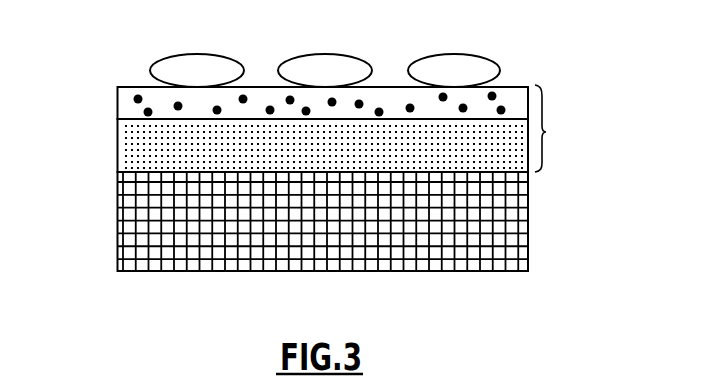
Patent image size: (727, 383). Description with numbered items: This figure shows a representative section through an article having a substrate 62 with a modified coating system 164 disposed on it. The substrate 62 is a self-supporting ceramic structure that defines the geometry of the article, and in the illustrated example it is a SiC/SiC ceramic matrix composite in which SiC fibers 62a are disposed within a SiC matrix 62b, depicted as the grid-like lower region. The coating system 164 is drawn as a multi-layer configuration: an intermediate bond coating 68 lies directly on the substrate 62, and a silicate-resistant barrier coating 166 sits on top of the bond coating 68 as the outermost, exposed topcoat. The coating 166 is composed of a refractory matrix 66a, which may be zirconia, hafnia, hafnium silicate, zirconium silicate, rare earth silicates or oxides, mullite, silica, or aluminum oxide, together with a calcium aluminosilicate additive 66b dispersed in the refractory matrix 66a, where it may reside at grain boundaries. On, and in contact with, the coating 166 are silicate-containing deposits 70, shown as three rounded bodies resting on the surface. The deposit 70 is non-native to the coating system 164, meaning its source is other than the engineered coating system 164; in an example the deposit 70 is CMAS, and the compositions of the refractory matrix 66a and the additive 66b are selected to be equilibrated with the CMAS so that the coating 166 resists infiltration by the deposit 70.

The substrate 62 is at (352, 243).
The SiC fibers 62a is at (263, 252).
The SiC matrix 62b is at (232, 252).
The intermediate bond coating 68 is at (117, 152).
The coating system 164 is at (546, 132).
The silicate-resistant barrier coating 166 is at (117, 105).
The refractory matrix 66a is at (265, 97).
The calcium aluminosilicate additive 66b is at (362, 104).
The silicate-containing deposit 70 is at (176, 54).